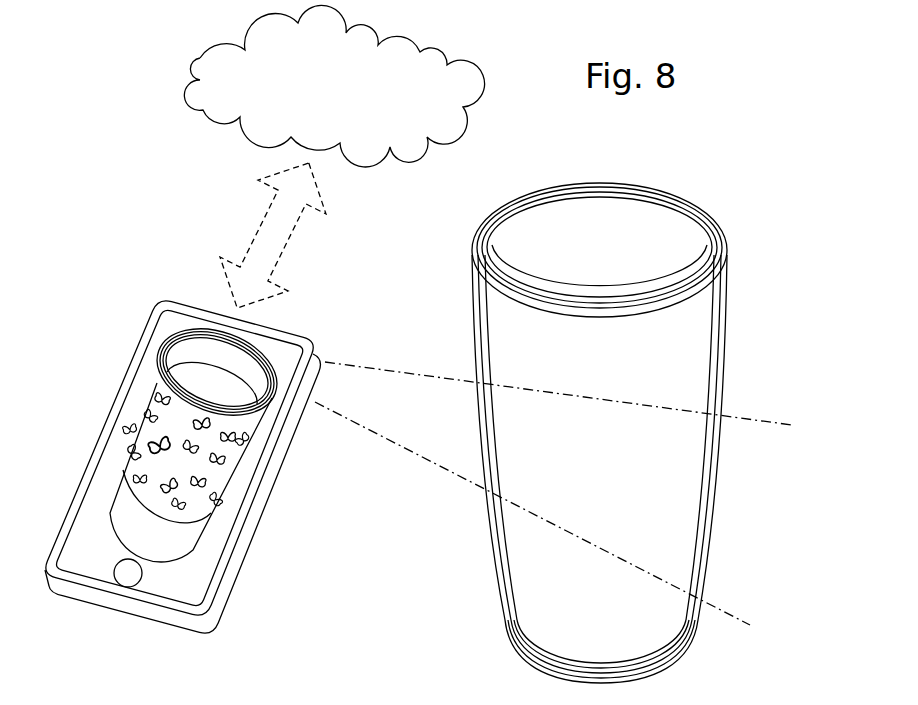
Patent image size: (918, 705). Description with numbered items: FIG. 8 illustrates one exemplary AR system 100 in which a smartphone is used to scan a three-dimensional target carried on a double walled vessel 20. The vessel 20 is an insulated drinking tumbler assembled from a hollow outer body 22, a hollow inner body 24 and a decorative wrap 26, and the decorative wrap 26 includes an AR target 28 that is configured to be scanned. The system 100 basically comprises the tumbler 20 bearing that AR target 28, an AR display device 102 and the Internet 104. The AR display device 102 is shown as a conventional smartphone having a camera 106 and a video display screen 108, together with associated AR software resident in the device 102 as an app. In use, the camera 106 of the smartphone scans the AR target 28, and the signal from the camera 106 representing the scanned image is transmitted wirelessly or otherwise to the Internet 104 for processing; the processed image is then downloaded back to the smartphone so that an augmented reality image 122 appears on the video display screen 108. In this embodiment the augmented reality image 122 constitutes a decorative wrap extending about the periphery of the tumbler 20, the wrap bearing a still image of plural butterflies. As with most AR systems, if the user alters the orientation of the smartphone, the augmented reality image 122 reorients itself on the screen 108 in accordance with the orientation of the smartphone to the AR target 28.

The AR system 100 is at (138, 213).
The AR display device 102 is at (406, 467).
The Internet 104 is at (202, 53).
The camera 106 is at (318, 382).
The video display screen 108 is at (278, 353).
The augmented reality image 122 is at (152, 462).
The double walled vessel 20 is at (610, 412).
The hollow outer body 22 is at (721, 455).
The hollow inner body 24 is at (552, 217).
The decorative wrap 26 is at (530, 535).
The AR target 28 is at (580, 462).